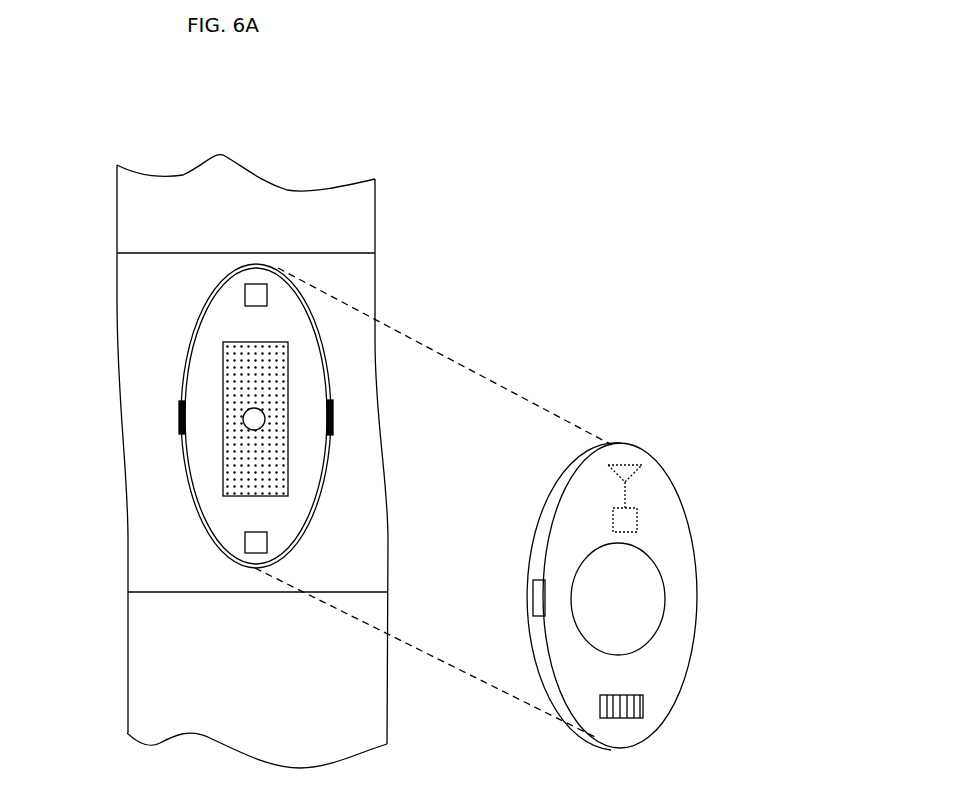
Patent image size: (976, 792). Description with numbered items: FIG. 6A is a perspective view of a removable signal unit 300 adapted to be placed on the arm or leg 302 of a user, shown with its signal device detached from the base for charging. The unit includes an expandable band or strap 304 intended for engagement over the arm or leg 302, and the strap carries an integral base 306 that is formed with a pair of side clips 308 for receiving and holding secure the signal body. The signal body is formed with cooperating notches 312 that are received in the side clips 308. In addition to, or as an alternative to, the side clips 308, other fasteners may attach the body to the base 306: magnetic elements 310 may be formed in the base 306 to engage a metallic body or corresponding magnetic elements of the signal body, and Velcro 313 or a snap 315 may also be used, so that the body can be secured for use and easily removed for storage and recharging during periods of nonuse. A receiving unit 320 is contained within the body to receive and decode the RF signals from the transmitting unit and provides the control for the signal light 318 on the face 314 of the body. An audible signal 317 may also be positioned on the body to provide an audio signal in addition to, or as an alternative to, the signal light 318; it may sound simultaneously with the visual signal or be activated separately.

The removable signal unit 300 is at (531, 216).
The arm or leg 302 is at (137, 210).
The expandable band or strap 304 is at (352, 290).
The base 306 is at (310, 353).
The side clips 308 is at (182, 407).
The magnetic elements 310 is at (255, 294).
The Velcro 313 is at (244, 373).
The snap 315 is at (252, 422).
The cooperating notches 312 is at (533, 595).
The face 314 is at (665, 673).
The audible signal 317 is at (634, 708).
The signal light 318 is at (632, 595).
The receiving unit 320 is at (632, 500).